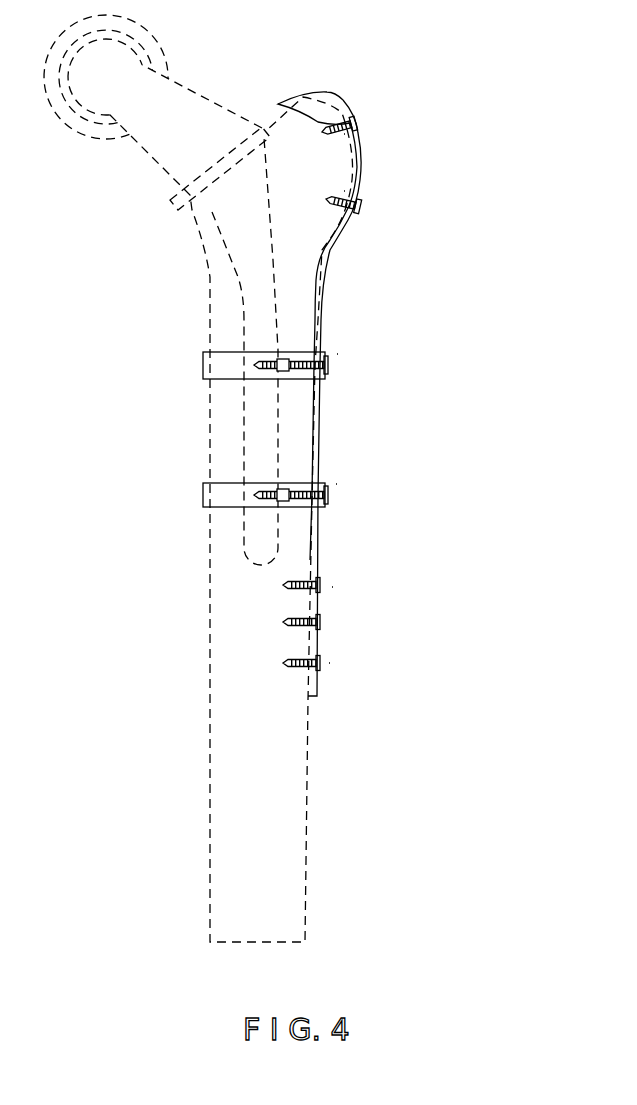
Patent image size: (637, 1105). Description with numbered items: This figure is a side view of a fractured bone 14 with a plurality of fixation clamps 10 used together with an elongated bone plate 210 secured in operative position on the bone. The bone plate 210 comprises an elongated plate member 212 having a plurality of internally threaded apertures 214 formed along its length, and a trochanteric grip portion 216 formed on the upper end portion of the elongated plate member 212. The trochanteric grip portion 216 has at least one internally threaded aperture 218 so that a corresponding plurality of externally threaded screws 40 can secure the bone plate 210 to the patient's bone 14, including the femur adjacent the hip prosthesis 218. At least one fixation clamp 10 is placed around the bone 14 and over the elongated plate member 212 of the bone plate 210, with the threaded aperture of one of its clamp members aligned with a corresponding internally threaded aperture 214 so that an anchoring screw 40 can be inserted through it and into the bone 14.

The fixation clamp 10 is at (189, 369).
The bone 14 is at (230, 745).
The screw 40 is at (325, 128).
The bone plate 210 is at (388, 361).
The elongated plate member 212 is at (316, 528).
The internally threaded aperture 214 is at (342, 136).
The trochanteric grip portion 216 is at (318, 90).
The hip prosthesis 218 is at (163, 155).